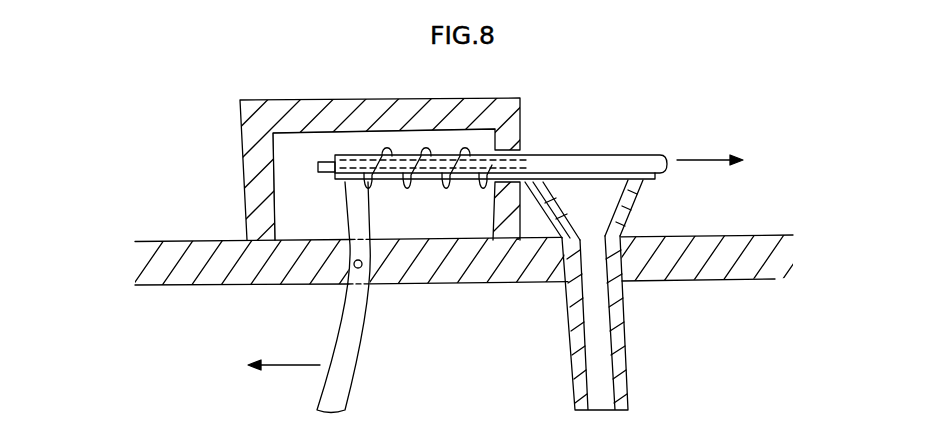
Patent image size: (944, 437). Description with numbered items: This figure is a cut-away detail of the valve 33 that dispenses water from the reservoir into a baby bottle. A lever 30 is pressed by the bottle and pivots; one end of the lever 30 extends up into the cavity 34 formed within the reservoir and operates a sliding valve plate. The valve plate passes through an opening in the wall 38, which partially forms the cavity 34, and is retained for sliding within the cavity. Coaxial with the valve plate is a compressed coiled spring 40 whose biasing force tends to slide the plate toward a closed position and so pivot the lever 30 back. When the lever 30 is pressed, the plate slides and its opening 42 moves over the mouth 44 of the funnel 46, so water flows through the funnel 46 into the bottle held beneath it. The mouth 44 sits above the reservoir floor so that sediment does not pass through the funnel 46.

The valve 33 is at (606, 95).
The cavity 34 is at (293, 160).
The wall 38 is at (506, 116).
The opening 42 is at (538, 163).
The compressed coiled spring 40 is at (397, 187).
The lever 30 is at (350, 320).
The mouth 44 is at (592, 202).
The funnel 46 is at (613, 308).